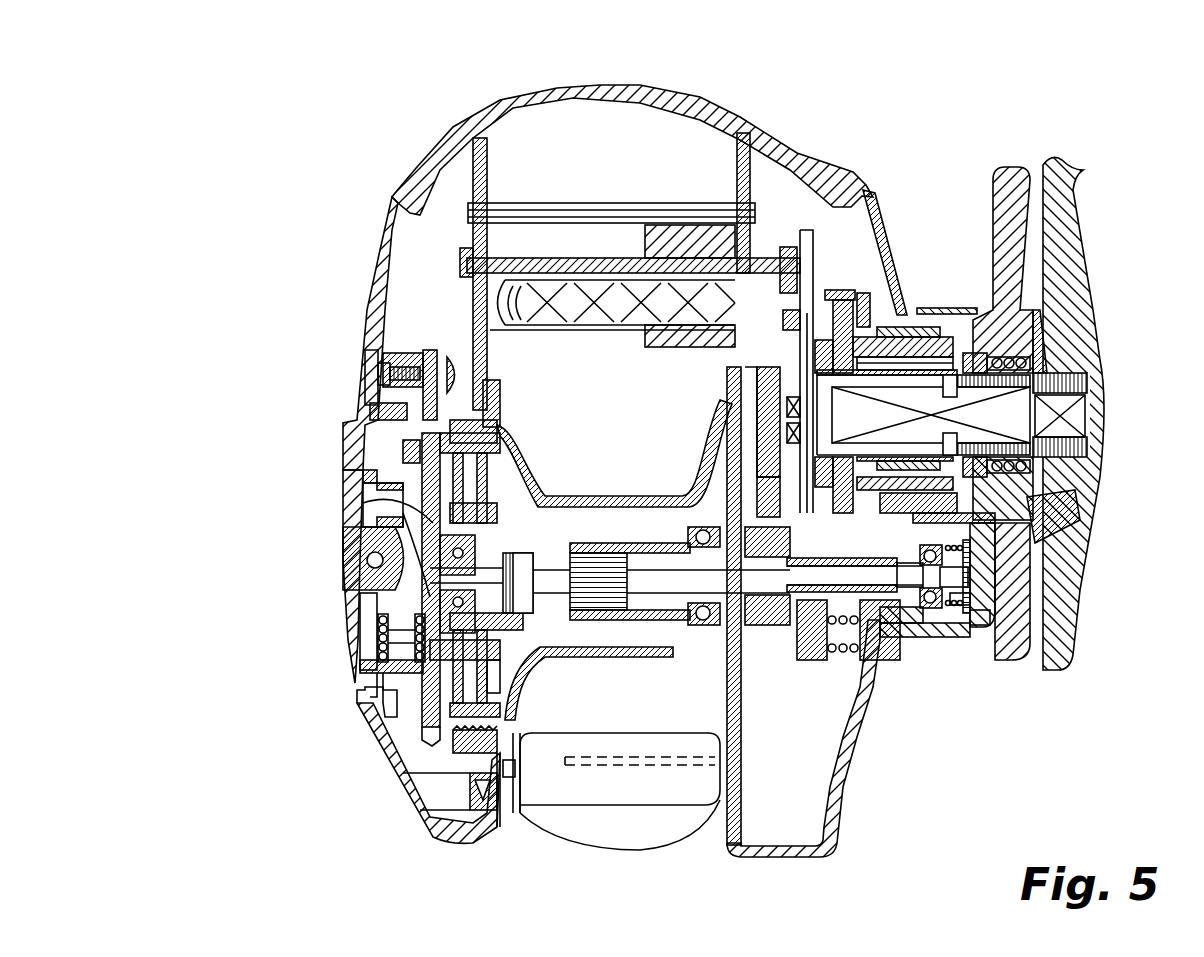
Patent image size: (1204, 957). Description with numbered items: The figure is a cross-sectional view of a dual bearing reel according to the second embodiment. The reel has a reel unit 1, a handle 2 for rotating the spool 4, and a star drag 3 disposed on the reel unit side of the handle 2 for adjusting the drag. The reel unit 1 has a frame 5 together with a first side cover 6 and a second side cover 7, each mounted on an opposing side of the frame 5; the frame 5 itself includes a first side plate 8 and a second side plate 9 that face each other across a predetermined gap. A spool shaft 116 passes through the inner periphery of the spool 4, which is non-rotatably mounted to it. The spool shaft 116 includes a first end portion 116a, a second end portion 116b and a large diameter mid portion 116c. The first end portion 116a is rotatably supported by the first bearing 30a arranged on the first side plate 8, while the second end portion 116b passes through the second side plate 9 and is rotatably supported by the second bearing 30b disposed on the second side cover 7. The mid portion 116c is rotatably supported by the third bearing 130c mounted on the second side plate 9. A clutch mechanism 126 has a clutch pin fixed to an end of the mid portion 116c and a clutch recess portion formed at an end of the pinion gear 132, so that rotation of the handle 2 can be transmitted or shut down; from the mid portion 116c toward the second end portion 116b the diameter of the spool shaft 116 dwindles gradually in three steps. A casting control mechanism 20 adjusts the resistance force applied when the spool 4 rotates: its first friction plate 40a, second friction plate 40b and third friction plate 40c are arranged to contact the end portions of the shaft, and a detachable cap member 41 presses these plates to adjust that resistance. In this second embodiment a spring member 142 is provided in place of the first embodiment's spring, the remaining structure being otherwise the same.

The reel unit 1 is at (440, 130).
The handle 2 is at (1095, 168).
The star drag 3 is at (1010, 180).
The spool 4 is at (580, 492).
The frame 5 is at (780, 130).
The first side cover 6 is at (355, 330).
The second side cover 7 is at (870, 200).
The first side plate 8 is at (470, 378).
The second side plate 9 is at (728, 396).
The casting control mechanism 20 is at (963, 648).
The first bearing 30a is at (430, 628).
The second bearing 30b is at (925, 640).
The first friction plate 40a is at (347, 580).
The second friction plate 40b is at (968, 572).
The third friction plate 40c is at (968, 597).
The cap member 41 is at (968, 540).
The spool shaft 116 is at (640, 650).
The first end portion 116a is at (345, 530).
The second end portion 116b is at (893, 600).
The large diameter mid portion 116c is at (640, 648).
The clutch mechanism 126 is at (717, 452).
The third bearing 130c is at (652, 848).
The pinion gear 132 is at (813, 670).
The spring member 142 is at (978, 615).